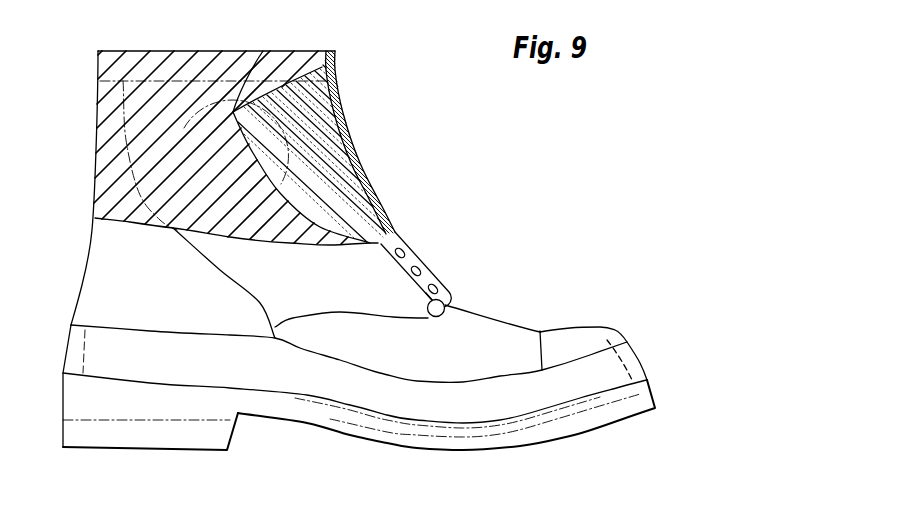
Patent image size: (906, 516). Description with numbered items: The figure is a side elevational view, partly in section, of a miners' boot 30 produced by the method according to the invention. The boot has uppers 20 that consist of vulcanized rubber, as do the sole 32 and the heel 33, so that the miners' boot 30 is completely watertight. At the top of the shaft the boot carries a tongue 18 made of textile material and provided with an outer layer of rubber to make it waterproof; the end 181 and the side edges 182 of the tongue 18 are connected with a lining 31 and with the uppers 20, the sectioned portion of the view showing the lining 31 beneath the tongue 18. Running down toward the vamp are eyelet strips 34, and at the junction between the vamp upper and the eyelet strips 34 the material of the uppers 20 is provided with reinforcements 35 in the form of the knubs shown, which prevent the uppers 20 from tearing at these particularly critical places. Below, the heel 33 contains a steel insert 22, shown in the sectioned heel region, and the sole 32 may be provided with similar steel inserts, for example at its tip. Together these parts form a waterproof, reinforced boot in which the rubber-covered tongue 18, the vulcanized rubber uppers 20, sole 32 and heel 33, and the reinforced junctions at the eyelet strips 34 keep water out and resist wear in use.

The miners' boot 30 is at (445, 168).
The lining 31 is at (178, 88).
The tongue 18 is at (315, 105).
The side edges of the tongue 182 is at (363, 183).
The end of the tongue 181 is at (447, 298).
The eyelet strips 34 is at (412, 260).
The reinforcements 35 is at (446, 307).
The uppers 20 is at (147, 182).
The steel insert 22 is at (130, 440).
The heel 33 is at (202, 417).
The sole 32 is at (380, 433).